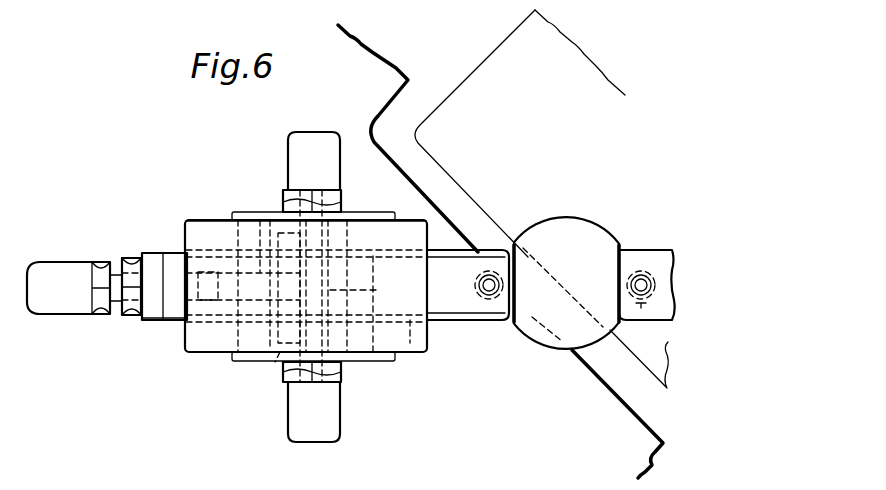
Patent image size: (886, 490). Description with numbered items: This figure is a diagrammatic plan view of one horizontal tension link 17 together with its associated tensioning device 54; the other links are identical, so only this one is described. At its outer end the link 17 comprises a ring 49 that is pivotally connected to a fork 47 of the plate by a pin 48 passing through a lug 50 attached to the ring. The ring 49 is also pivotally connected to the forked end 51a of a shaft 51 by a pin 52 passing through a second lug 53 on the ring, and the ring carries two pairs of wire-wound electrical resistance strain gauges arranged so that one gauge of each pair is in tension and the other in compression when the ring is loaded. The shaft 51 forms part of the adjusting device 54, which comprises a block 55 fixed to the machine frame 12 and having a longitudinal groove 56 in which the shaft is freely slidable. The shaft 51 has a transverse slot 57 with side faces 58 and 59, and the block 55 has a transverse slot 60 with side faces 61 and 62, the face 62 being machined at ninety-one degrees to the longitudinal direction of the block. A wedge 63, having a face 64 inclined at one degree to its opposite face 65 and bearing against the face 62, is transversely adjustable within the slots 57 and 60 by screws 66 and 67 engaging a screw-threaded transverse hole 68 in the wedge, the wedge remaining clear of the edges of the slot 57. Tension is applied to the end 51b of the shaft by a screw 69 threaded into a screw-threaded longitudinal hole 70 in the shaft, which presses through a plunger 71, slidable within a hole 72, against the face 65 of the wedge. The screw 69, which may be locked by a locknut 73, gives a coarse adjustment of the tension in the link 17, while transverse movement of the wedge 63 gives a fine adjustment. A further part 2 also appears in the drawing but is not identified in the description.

The vehicle body plate 2 is at (475, 80).
The machine frame 12 is at (362, 68).
The horizontal tension link 17 is at (523, 228).
The fork 47 is at (648, 250).
The pin 48 is at (638, 276).
The ring 49 is at (558, 218).
The lug 50 is at (630, 314).
The shaft 51 is at (460, 305).
The forked end 51a is at (480, 325).
The end of shaft 51b is at (167, 265).
The pin 52 is at (480, 268).
The lug 53 is at (500, 322).
The adjusting device 54 is at (198, 354).
The block 55 is at (208, 234).
The longitudinal groove 56 is at (386, 340).
The transverse slot 57 is at (262, 226).
The side face 58 is at (240, 226).
The side face 59 is at (372, 258).
The transverse slot 60 is at (278, 352).
The side face 61 is at (262, 328).
The side face 62 is at (350, 352).
The wedge 63 is at (326, 240).
The face 64 is at (348, 228).
The face 65 is at (283, 226).
The screw 66 is at (342, 215).
The screw 67 is at (300, 368).
The screw-threaded transverse hole 68 is at (362, 292).
The screw 69 is at (175, 278).
The screw-threaded longitudinal hole 70 is at (168, 258).
The plunger 71 is at (226, 340).
The hole 72 is at (240, 300).
The locknut 73 is at (122, 312).